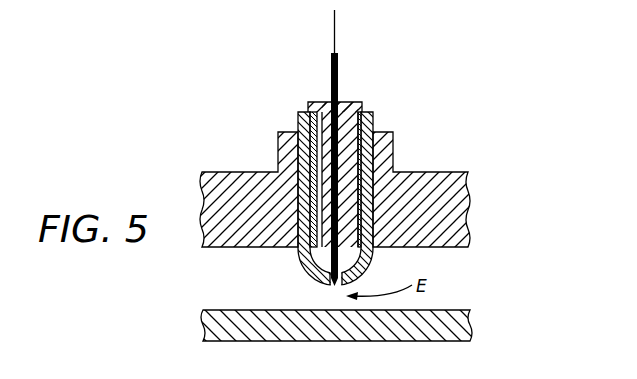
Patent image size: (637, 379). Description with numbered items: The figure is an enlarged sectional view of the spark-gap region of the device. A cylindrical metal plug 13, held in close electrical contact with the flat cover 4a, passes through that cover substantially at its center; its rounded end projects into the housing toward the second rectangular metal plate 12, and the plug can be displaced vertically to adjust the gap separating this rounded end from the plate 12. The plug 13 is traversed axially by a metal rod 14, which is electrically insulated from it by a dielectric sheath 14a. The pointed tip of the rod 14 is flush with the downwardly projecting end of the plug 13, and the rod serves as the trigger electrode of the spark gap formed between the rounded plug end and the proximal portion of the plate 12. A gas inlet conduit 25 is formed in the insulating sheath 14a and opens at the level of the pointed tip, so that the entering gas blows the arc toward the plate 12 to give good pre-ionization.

The cover 4a is at (428, 182).
The plug 13 is at (298, 119).
The gas inlet conduit 25 is at (320, 101).
The dielectric sheath 14a is at (355, 101).
The metal rod 14 is at (339, 65).
The second rectangular metal plate 12 is at (225, 316).